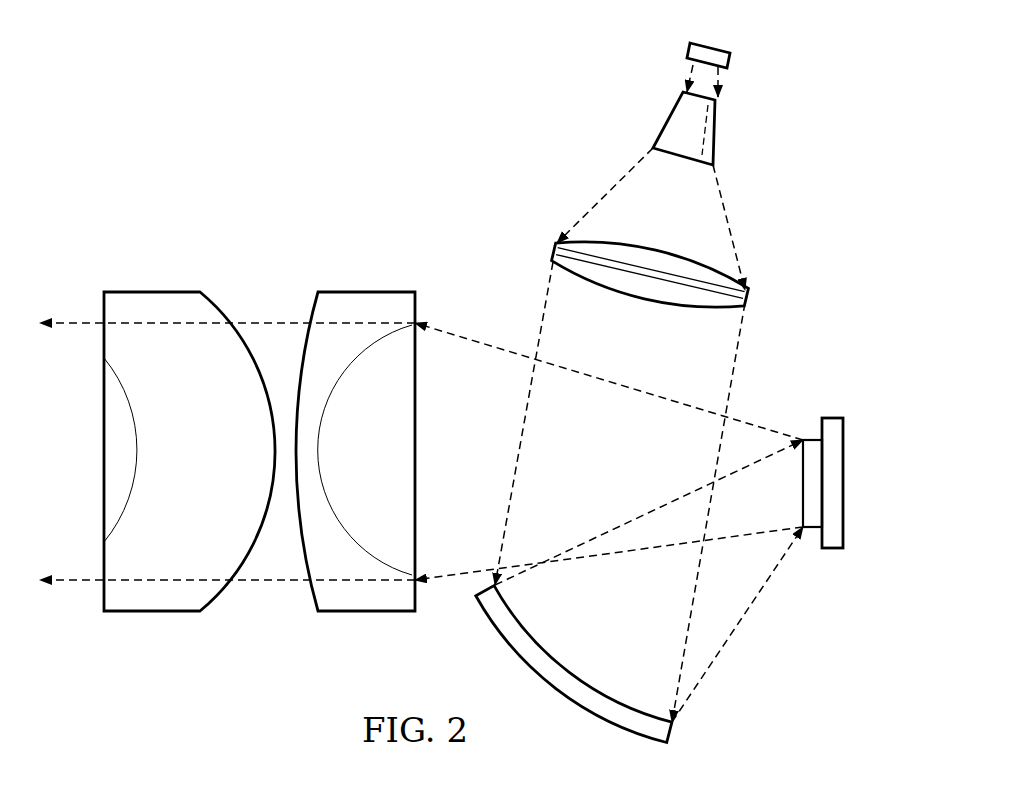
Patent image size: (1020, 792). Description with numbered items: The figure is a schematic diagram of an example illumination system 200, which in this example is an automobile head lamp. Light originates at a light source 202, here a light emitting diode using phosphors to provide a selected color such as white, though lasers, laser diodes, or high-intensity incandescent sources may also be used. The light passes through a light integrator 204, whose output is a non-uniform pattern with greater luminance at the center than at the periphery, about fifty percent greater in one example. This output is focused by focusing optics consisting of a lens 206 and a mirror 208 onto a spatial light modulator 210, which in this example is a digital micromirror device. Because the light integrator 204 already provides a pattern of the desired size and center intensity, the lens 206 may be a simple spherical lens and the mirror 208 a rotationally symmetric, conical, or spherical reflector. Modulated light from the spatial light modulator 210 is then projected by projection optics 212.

The illumination system 200 is at (291, 159).
The light source 202 is at (731, 55).
The light integrator 204 is at (715, 130).
The lens 206 is at (656, 255).
The mirror 208 is at (568, 672).
The spatial light modulator 210 is at (845, 480).
The projection optics 212 is at (415, 625).